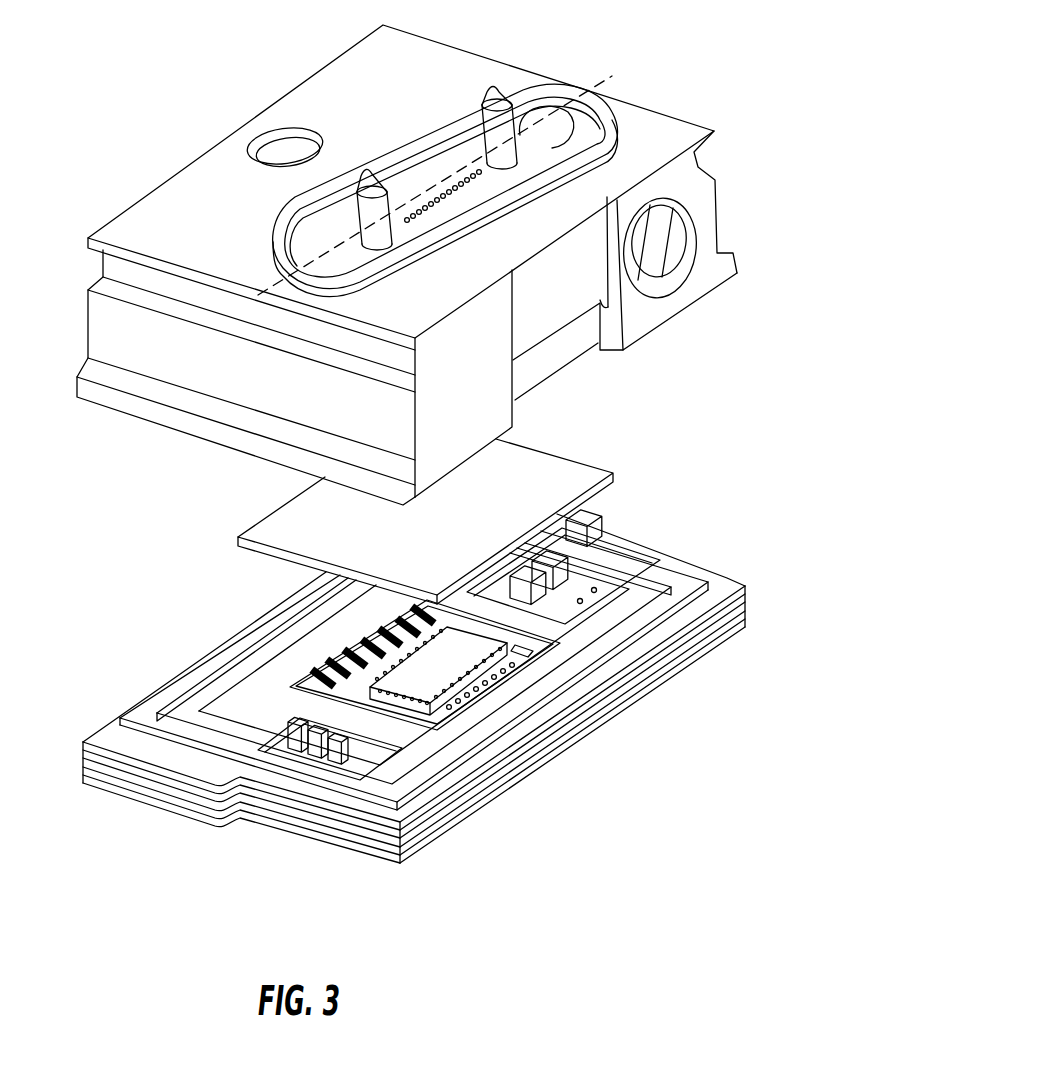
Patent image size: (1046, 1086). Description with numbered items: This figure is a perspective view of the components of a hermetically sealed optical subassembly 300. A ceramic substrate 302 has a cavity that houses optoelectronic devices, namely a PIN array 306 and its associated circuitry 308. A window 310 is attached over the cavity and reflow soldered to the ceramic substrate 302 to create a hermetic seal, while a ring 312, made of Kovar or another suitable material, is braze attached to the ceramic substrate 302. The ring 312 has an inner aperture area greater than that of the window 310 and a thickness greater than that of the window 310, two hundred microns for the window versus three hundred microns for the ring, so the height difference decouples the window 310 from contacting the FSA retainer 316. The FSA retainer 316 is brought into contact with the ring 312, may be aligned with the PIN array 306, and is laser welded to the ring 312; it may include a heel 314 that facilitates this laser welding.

The hermetically sealed optical subassembly 300 is at (772, 268).
The ceramic substrate 302 is at (686, 643).
The PIN array 306 is at (435, 726).
The circuitry 308 is at (480, 663).
The window 310 is at (573, 460).
The ring 312 is at (708, 580).
The heel 314 is at (85, 376).
The FSA retainer 316 is at (632, 100).